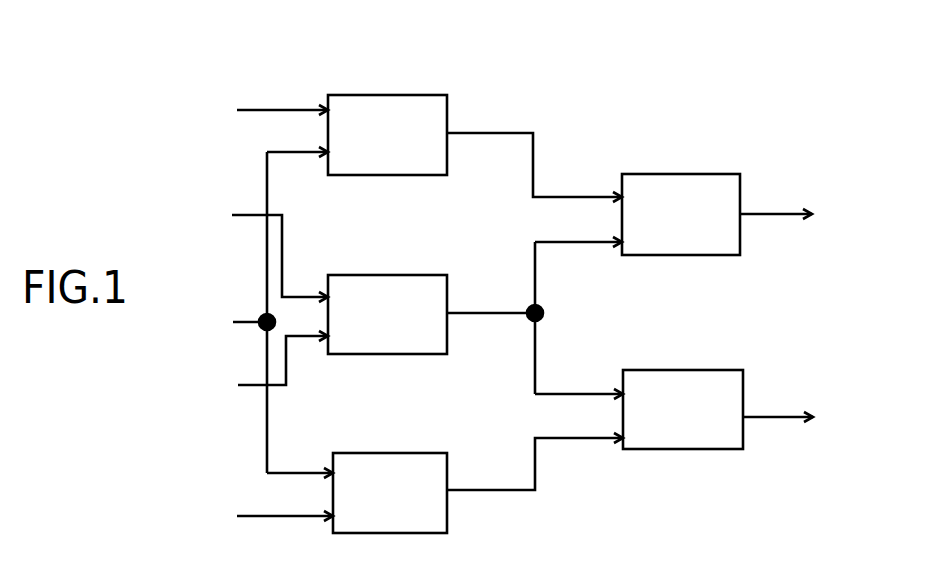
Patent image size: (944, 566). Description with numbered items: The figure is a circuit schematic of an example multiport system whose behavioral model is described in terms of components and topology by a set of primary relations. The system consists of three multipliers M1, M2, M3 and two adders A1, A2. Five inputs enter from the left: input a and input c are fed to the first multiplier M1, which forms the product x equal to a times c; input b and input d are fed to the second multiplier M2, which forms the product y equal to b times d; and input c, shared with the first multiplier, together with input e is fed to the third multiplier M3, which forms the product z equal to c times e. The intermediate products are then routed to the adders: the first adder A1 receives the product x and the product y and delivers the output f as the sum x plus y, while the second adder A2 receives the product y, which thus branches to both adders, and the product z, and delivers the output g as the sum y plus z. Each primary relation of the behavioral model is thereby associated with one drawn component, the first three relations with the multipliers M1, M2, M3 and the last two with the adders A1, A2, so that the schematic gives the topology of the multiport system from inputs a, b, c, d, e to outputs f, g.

The first multiplier M1 is at (410, 102).
The second multiplier M2 is at (420, 283).
The third multiplier M3 is at (405, 457).
The first adder A1 is at (708, 175).
The second adder A2 is at (713, 377).
The input a is at (266, 110).
The input b is at (270, 251).
The input c is at (274, 312).
The input d is at (270, 365).
The input e is at (272, 516).
The product x is at (534, 152).
The product y is at (535, 318).
The product z is at (535, 461).
The output f is at (786, 216).
The output g is at (791, 414).